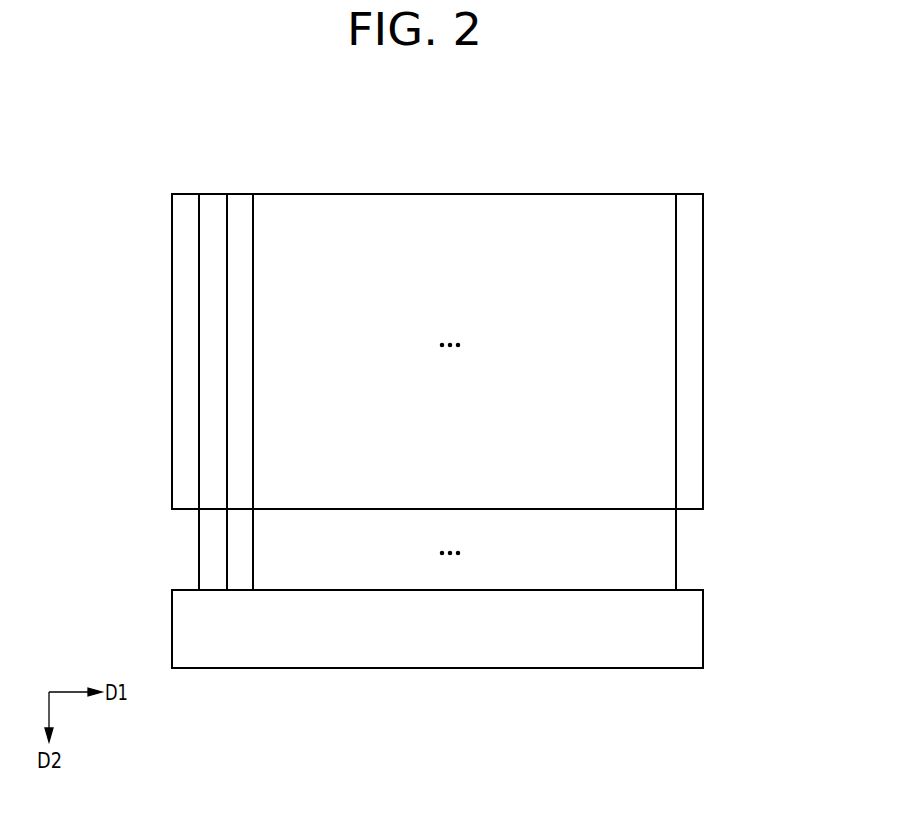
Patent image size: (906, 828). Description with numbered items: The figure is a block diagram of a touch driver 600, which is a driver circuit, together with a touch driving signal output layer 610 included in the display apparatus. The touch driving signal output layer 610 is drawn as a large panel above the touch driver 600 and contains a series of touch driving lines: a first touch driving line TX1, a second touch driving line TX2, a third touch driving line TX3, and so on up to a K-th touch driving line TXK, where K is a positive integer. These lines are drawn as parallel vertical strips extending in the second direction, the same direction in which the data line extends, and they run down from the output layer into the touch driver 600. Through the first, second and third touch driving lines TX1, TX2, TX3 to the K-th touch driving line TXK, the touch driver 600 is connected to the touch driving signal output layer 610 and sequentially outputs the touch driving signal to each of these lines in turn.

The touch driving signal output layer 610 is at (703, 352).
The touch driver 600 is at (703, 627).
The first touch driving line TX1 is at (199, 577).
The second touch driving line TX2 is at (226, 549).
The third touch driving line TX3 is at (252, 521).
The K-th touch driving line TXK is at (676, 549).